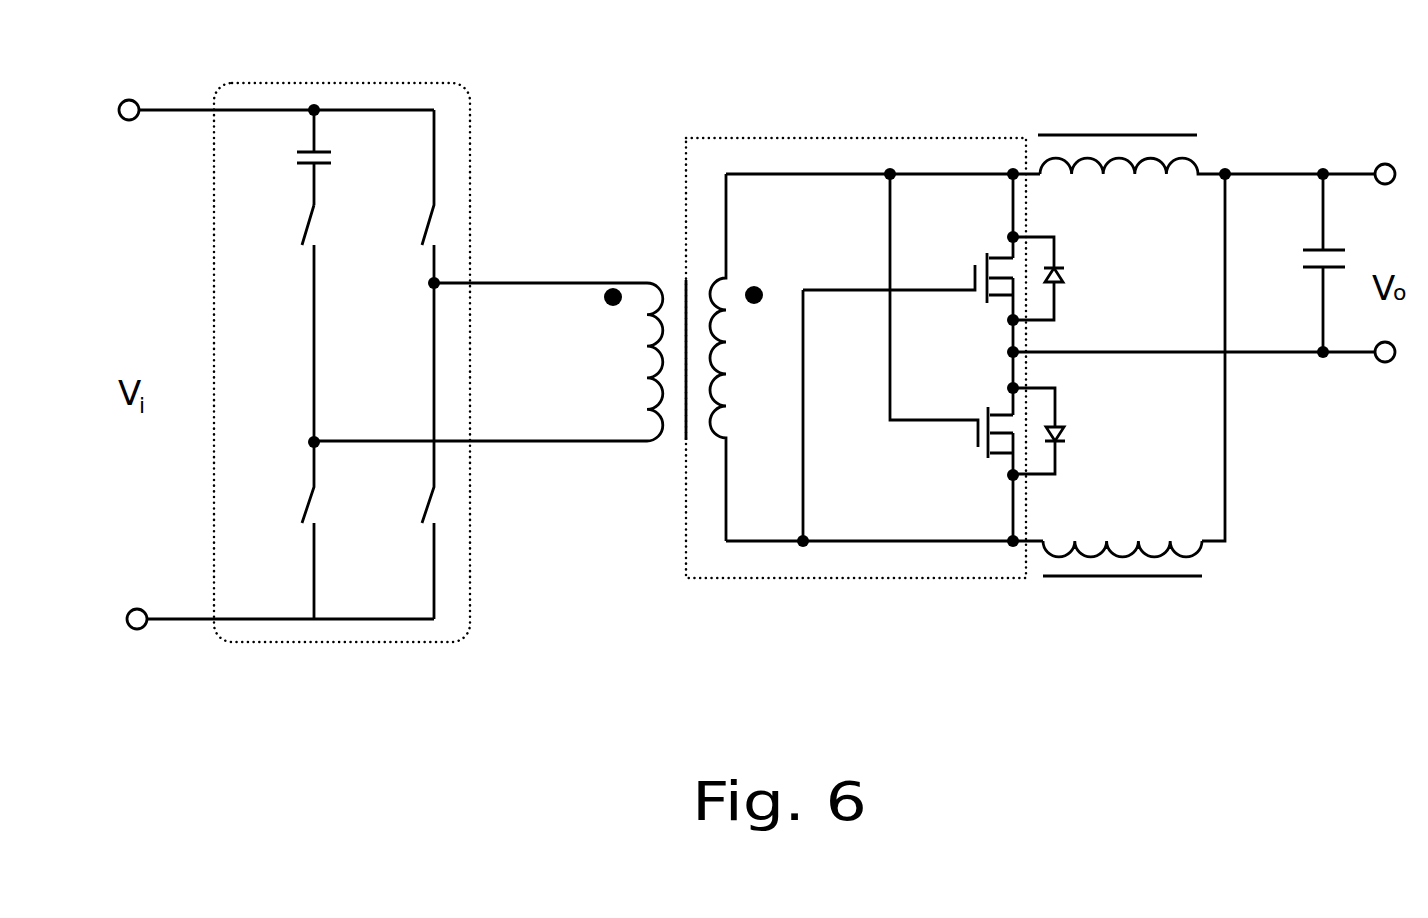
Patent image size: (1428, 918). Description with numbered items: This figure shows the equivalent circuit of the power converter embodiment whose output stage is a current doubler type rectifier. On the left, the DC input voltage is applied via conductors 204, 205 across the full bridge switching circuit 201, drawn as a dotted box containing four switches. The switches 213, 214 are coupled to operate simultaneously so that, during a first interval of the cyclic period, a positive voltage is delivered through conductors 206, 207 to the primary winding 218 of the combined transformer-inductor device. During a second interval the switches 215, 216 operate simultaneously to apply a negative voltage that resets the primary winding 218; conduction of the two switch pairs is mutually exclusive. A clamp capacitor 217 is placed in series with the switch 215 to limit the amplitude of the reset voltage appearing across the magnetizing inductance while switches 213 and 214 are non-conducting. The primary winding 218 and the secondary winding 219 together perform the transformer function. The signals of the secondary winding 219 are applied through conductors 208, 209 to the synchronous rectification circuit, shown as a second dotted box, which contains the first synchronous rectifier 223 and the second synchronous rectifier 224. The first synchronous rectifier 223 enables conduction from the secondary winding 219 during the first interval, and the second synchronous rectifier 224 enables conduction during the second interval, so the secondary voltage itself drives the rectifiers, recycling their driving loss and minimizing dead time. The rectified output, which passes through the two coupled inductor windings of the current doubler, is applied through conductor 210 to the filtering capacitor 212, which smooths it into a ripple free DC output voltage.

The full bridge switching circuit 201 is at (360, 97).
The conductor 204 is at (167, 109).
The conductor 205 is at (175, 620).
The conductor 206 is at (545, 281).
The conductor 207 is at (548, 443).
The conductor 208 is at (808, 172).
The conductor 209 is at (752, 545).
The conductor 210 is at (1343, 170).
The filtering capacitor 212 is at (1297, 263).
The switch 213 is at (399, 196).
The switch 214 is at (284, 527).
The switch 215 is at (278, 323).
The switch 216 is at (405, 448).
The clamp capacitor 217 is at (284, 157).
The primary winding 218 is at (621, 362).
The secondary winding 219 is at (744, 357).
The first synchronous rectifier 223 is at (1070, 431).
The second synchronous rectifier 224 is at (1069, 278).